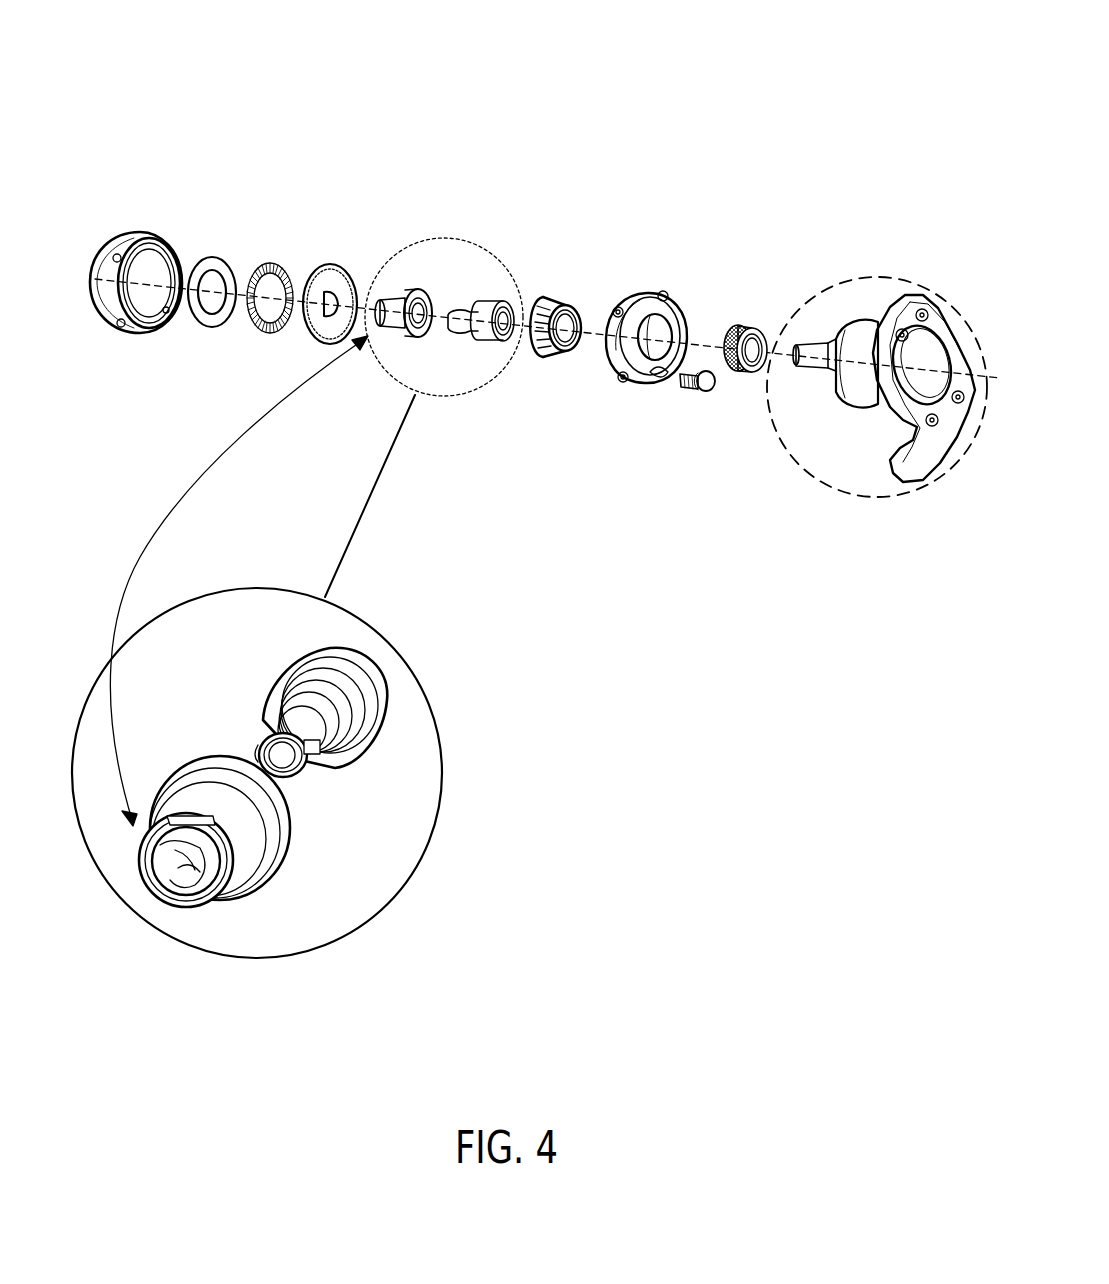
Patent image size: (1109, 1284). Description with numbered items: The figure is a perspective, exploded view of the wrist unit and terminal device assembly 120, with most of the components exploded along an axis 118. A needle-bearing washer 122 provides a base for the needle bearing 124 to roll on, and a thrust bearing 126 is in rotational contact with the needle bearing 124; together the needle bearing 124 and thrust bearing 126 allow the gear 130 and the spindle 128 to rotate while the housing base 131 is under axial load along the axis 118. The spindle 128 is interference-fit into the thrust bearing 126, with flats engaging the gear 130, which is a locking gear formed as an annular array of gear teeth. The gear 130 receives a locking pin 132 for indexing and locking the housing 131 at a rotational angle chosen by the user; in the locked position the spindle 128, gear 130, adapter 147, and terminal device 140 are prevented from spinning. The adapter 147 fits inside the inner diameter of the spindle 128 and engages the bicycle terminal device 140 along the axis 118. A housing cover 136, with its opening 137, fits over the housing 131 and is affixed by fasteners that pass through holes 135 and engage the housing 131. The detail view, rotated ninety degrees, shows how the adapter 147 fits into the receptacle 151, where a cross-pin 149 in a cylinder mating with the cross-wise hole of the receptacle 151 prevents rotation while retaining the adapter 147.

The grinder assembly 120 is at (230, 43).
The axis 118 is at (83, 275).
The housing base 131 is at (165, 267).
The needle-bearing washer 122 is at (213, 267).
The needle bearing 124 is at (272, 270).
The gear 130 is at (337, 280).
The spindle 128 is at (392, 305).
The adapter 147 is at (485, 307).
The thrust bearing 126 is at (545, 307).
The housing cover 136 is at (660, 314).
The flange opening 137 is at (655, 352).
The holes 135 is at (624, 386).
The locking pin 132 is at (709, 391).
The terminal device 140 is at (888, 278).
The cross-pin 149 is at (320, 763).
The receptacle 151 is at (172, 855).